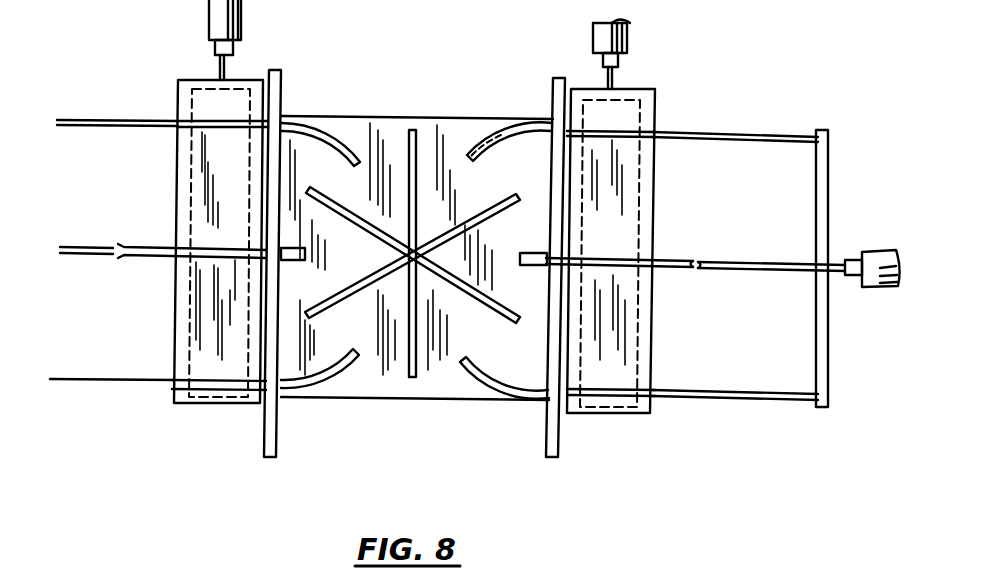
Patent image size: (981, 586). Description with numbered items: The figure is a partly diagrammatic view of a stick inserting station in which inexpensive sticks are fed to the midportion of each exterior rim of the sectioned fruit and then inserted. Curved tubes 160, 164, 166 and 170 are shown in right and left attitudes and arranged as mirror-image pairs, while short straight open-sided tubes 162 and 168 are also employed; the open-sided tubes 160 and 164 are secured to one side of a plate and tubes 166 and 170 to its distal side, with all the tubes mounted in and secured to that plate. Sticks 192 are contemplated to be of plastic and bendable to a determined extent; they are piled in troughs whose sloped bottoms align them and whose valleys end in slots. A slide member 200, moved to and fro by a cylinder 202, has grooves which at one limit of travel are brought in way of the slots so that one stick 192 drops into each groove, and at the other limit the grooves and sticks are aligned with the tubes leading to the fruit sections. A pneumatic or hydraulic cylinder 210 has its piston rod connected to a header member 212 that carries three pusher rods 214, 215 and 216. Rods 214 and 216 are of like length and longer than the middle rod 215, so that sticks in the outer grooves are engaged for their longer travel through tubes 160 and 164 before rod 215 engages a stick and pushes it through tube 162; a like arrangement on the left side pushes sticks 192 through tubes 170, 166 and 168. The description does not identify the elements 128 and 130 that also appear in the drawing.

The support plate 128 is at (281, 72).
The support plate 130 is at (560, 440).
The curved tube 160 is at (520, 127).
The short straight open-sided tube 162 is at (530, 266).
The curved tube 164 is at (493, 384).
The curved tube 166 is at (328, 384).
The short straight open-sided tube 168 is at (297, 261).
The curved tube 170 is at (318, 124).
The stick 192 is at (490, 137).
The slide member 200 is at (193, 100).
The cylinder 202 is at (208, 22).
The pneumatic or hydraulic cylinder 210 is at (888, 287).
The header member 212 is at (828, 348).
The pusher rod 214 is at (798, 132).
The pusher rod 215 is at (790, 262).
The pusher rod 216 is at (777, 392).